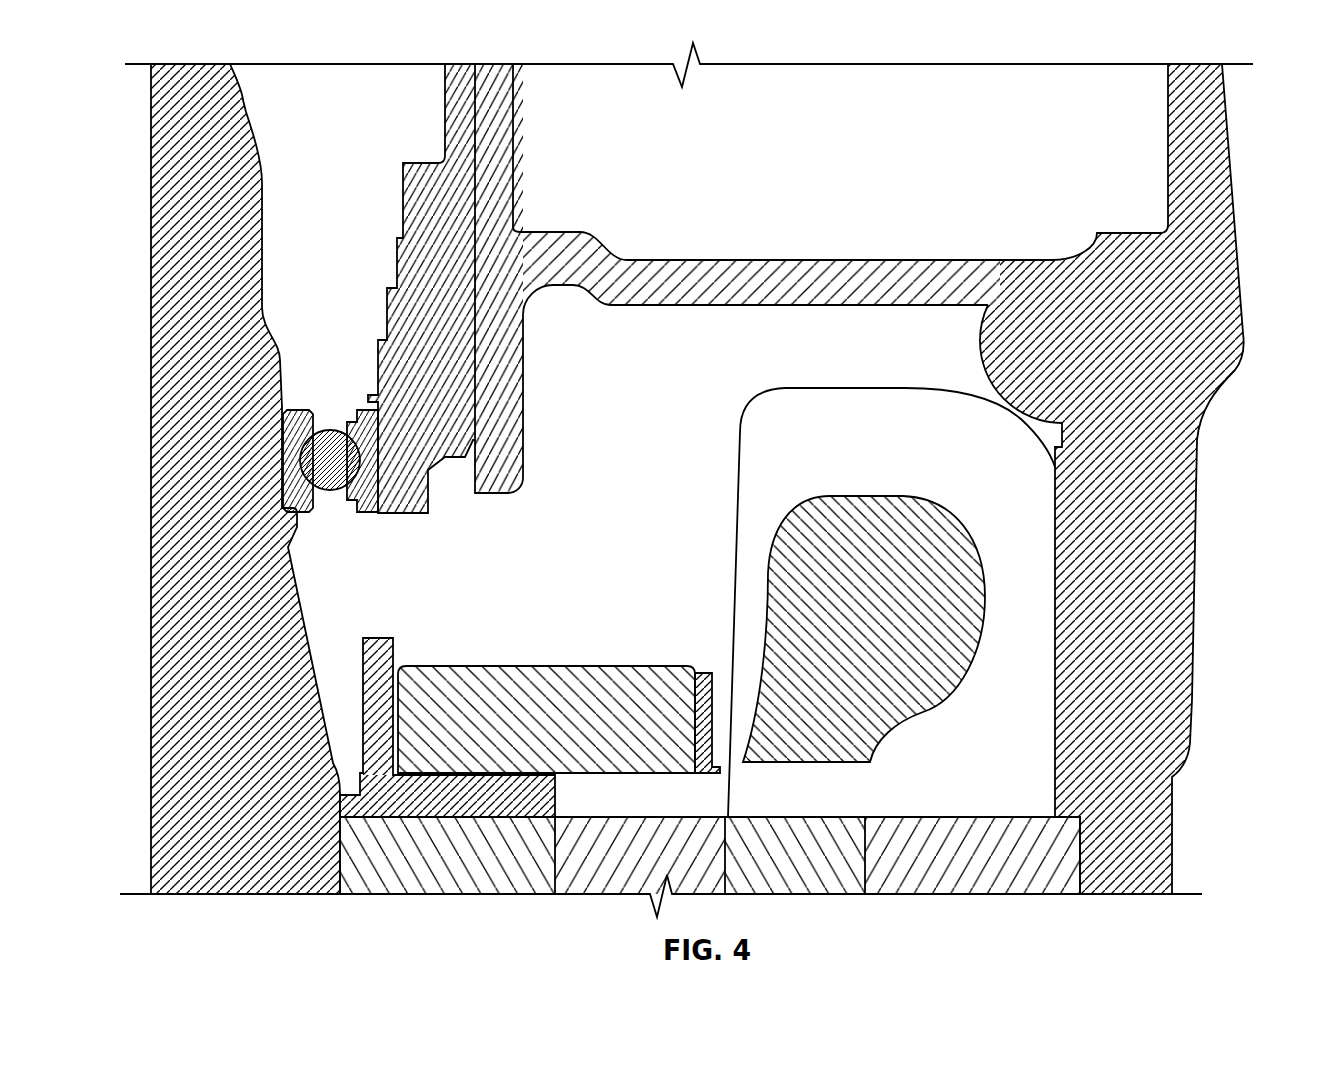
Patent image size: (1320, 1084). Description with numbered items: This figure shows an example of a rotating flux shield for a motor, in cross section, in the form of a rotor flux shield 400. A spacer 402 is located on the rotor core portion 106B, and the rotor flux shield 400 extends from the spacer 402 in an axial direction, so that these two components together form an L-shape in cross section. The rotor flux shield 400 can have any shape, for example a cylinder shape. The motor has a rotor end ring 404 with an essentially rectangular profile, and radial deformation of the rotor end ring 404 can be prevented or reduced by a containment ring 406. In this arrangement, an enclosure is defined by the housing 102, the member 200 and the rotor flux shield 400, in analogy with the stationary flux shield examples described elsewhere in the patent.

The housing 102 is at (1195, 517).
The rotor core portion 106B is at (340, 838).
The member 200 is at (844, 259).
The rotor flux shield 400 is at (362, 667).
The spacer 402 is at (468, 817).
The rotor end ring 404 is at (500, 666).
The containment ring 406 is at (727, 690).